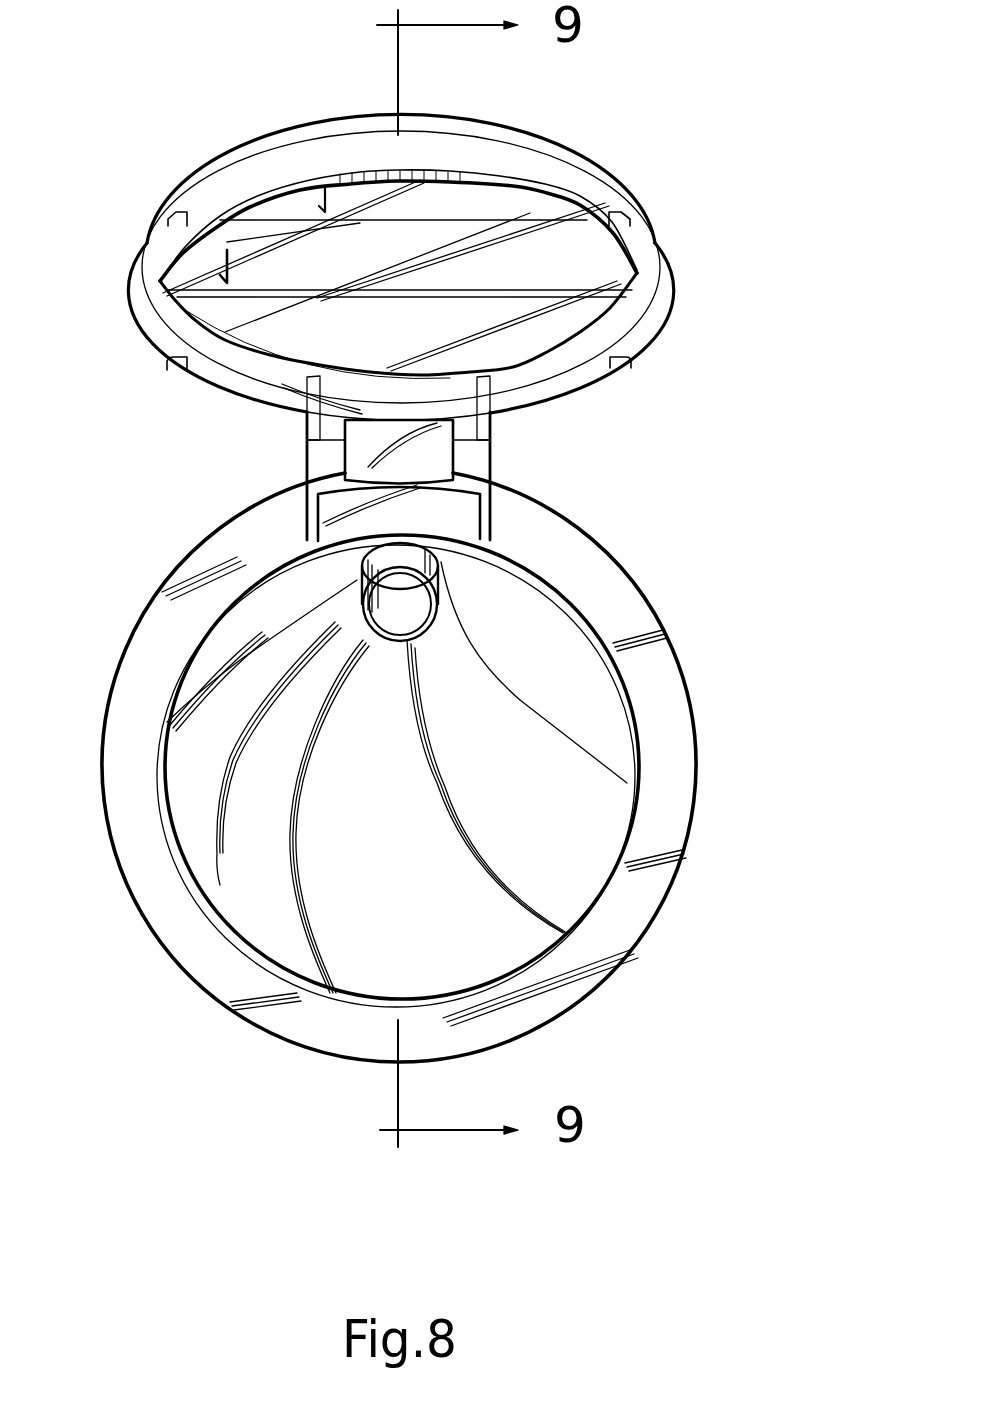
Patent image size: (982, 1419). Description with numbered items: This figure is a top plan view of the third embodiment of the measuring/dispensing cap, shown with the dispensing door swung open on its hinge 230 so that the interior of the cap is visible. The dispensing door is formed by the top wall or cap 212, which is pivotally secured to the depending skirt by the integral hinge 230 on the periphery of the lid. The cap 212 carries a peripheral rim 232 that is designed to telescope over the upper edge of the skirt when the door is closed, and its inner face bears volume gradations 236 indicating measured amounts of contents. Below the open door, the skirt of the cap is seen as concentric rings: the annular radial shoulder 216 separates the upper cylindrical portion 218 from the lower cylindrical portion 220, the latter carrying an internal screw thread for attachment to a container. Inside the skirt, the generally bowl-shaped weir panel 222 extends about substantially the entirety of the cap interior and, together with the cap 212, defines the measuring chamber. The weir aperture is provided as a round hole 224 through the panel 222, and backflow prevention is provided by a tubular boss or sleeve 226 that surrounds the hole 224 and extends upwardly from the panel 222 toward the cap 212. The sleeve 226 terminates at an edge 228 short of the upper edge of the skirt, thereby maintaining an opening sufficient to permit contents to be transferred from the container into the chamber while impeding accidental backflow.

The cap 212 is at (400, 249).
The annular radial shoulder 216 is at (652, 707).
The upper cylindrical portion 218 is at (643, 887).
The lower cylindrical portion 220 is at (700, 773).
The weir panel 222 is at (560, 830).
The round hole 224 is at (401, 607).
The tubular boss or sleeve 226 is at (440, 558).
The edge 228 is at (366, 624).
The hinge 230 is at (420, 450).
The peripheral rim 232 is at (221, 183).
The volume gradations 236 is at (428, 296).